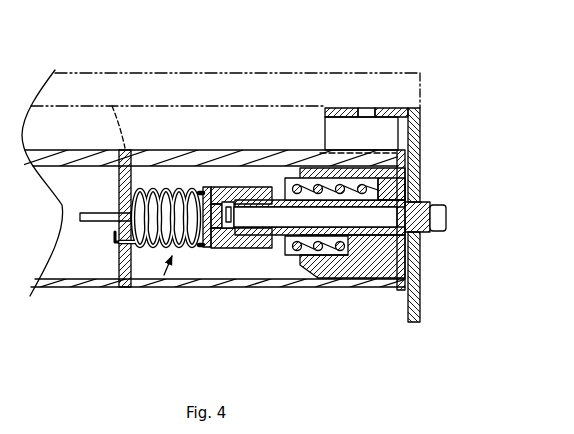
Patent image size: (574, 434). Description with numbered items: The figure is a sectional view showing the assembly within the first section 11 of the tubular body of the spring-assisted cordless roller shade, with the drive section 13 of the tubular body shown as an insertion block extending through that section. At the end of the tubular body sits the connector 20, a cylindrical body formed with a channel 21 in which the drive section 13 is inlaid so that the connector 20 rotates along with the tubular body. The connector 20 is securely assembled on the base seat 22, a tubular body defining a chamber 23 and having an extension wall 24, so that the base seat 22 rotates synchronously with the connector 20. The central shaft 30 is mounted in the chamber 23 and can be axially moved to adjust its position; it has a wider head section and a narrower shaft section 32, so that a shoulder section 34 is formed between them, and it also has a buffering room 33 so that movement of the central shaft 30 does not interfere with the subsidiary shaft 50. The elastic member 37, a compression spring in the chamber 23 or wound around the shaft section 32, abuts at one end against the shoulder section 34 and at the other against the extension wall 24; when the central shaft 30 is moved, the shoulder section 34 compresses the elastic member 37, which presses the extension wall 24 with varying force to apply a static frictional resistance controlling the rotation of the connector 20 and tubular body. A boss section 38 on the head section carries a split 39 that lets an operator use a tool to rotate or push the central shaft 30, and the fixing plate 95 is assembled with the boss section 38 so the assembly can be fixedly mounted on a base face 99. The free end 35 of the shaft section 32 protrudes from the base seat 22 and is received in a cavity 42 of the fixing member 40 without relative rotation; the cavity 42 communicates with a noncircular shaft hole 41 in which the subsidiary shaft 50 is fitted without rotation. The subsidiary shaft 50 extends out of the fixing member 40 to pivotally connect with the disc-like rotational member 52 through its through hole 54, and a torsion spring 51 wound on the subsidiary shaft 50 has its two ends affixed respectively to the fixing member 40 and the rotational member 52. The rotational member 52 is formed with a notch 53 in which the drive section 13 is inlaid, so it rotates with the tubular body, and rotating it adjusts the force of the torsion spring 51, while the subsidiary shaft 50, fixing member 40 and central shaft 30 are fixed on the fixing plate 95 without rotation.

The base face 99 is at (300, 74).
The fixing plate 95 is at (400, 107).
The notch 53 is at (120, 106).
The drive section 13 is at (213, 148).
The torsion spring 51 is at (168, 190).
The through hole 54 is at (117, 212).
The subsidiary shaft 50 is at (88, 222).
The rotational member 52 is at (123, 288).
The first section 11 is at (168, 287).
The shaft hole 41 is at (208, 248).
The fixing member 40 is at (224, 187).
The cavity 42 is at (232, 250).
The free end 35 is at (245, 248).
The buffering room 33 is at (263, 215).
The elastic member 37 is at (314, 185).
The chamber 23 is at (358, 152).
The shoulder section 34 is at (372, 178).
The channel 21 is at (352, 112).
The connector 20 is at (355, 280).
The shaft section 32 is at (325, 258).
The extension wall 24 is at (280, 265).
The central shaft 30 is at (412, 238).
The boss section 38 is at (420, 205).
The split 39 is at (448, 217).
The base seat 22 is at (378, 280).